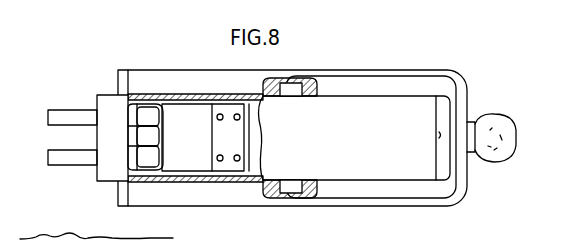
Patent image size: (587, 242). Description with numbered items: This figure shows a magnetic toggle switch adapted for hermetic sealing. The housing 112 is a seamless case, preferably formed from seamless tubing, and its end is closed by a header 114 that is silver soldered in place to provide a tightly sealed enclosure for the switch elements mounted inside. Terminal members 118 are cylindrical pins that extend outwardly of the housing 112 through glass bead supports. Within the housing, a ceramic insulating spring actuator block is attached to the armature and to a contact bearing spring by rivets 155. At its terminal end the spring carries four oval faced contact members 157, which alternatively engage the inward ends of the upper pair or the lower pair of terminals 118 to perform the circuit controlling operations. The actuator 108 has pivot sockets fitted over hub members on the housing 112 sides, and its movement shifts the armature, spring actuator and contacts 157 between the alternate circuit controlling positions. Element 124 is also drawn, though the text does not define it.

The actuator 108 is at (463, 97).
The housing 112 is at (418, 194).
The header 114 is at (123, 93).
The terminal members 118 is at (62, 148).
The knob 124 is at (516, 135).
The rivets 155 is at (218, 116).
The oval faced contact members 157 is at (162, 128).